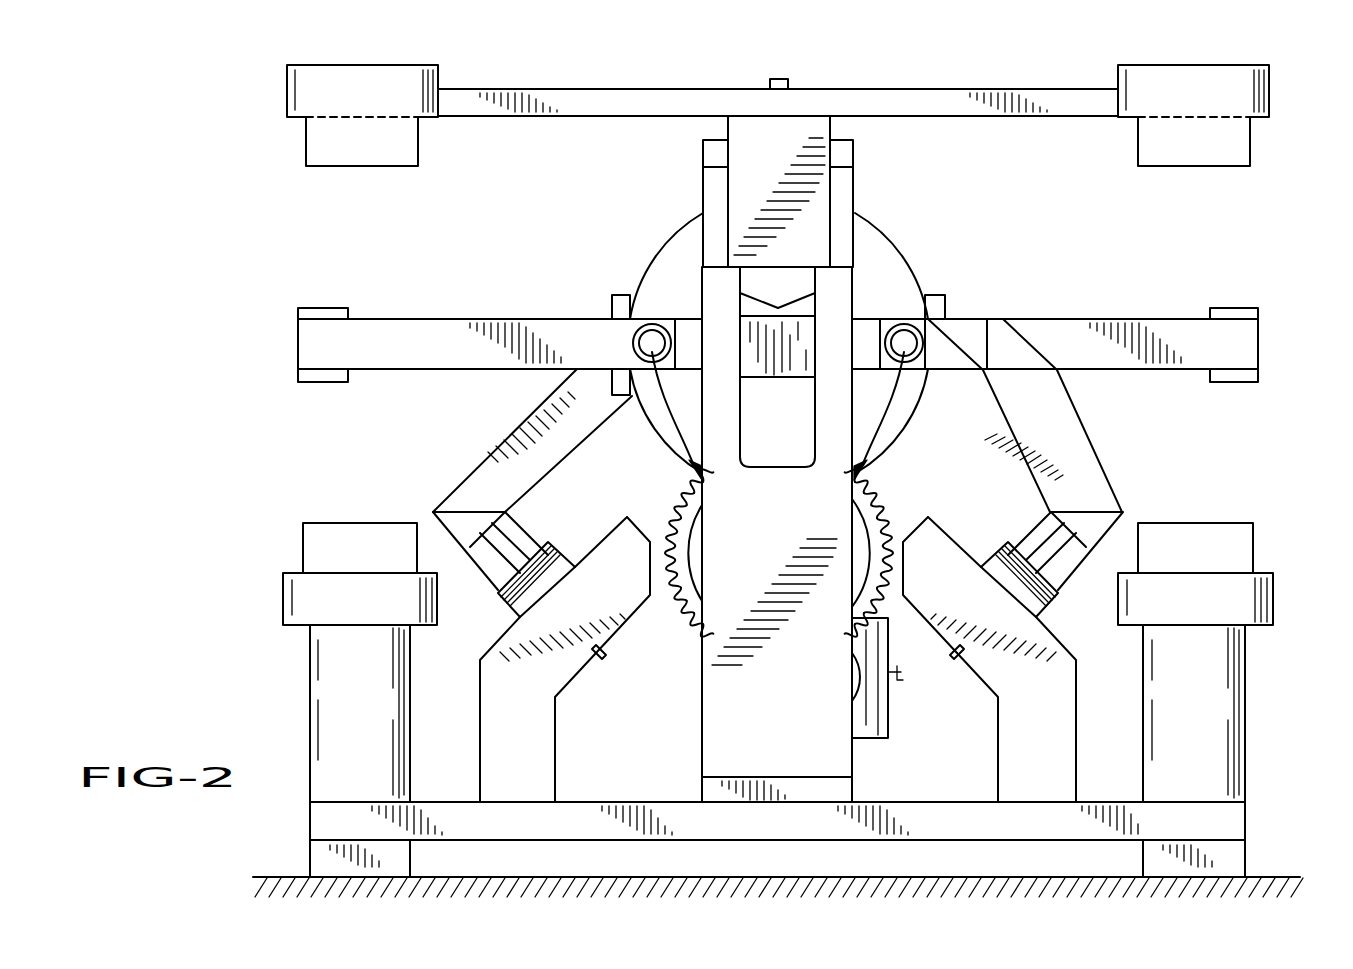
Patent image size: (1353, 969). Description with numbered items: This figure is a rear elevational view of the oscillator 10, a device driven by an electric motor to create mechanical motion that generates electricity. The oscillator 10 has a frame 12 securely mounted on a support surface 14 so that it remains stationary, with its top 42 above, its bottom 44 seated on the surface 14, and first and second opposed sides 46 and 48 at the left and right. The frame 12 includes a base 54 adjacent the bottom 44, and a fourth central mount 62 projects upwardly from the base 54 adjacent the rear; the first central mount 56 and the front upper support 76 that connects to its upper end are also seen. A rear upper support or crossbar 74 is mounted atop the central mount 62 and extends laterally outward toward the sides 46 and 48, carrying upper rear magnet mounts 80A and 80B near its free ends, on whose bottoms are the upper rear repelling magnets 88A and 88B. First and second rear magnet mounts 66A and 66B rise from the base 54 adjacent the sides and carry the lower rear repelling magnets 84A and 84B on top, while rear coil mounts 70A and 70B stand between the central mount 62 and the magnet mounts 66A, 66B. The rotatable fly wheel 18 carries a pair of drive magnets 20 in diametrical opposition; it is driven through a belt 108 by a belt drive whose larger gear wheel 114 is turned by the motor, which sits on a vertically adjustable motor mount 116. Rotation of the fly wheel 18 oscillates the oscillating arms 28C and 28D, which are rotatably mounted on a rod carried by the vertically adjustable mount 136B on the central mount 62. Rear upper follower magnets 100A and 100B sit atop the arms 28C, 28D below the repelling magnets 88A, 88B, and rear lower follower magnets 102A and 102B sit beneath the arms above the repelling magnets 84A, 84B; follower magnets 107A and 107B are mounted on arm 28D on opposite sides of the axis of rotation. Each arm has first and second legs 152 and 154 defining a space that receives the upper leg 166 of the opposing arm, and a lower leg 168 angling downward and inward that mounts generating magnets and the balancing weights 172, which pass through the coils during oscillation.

The oscillator 10 is at (208, 172).
The frame 12 is at (1252, 815).
The support surface 14 is at (1258, 876).
The fly wheel 18 is at (680, 245).
The drive magnets 20 is at (620, 297).
The oscillating arm 28C is at (508, 434).
The oscillating arm 28D is at (1062, 440).
The top 42 is at (890, 76).
The bottom 44 is at (850, 848).
The first side 46 is at (1290, 372).
The second side 48 is at (280, 370).
The base 54 is at (448, 812).
The first central mount 56 is at (710, 185).
The fourth central mount 62 is at (725, 712).
The first rear magnet mount 66A is at (1225, 668).
The second rear magnet mount 66B is at (325, 668).
The rear coil mount 70A is at (1020, 717).
The rear coil mount 70B is at (540, 775).
The rear upper support or crossbar 74 is at (605, 88).
The front upper support 76 is at (845, 155).
The upper rear magnet mount 80A is at (1217, 78).
The upper rear magnet mount 80B is at (323, 80).
The lower rear repelling magnet 84A is at (1194, 525).
The lower rear repelling magnet 84B is at (362, 525).
The upper rear repelling magnet 88A is at (1197, 148).
The upper rear repelling magnet 88B is at (360, 148).
The rear upper follower magnet 100A is at (1232, 307).
The rear upper follower magnet 100B is at (323, 307).
The rear lower follower magnet 102A is at (1236, 383).
The rear lower follower magnet 102B is at (326, 383).
The follower magnet 107A is at (904, 346).
The follower magnet 107B is at (652, 346).
The belt 108 is at (686, 470).
The gear wheel 114 is at (872, 505).
The motor mount 116 is at (890, 727).
The vertically adjustable mount 136B is at (790, 322).
The first leg 152 is at (565, 328).
The second leg 154 is at (1057, 325).
The upper leg 166 is at (548, 410).
The lower leg 168 is at (523, 527).
The balancing weights 172 is at (548, 580).